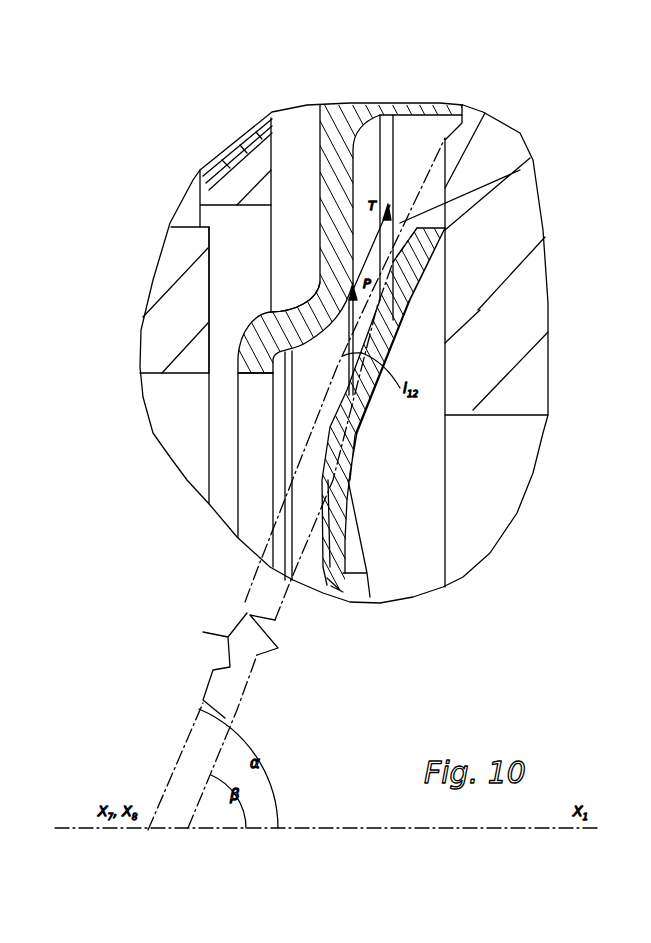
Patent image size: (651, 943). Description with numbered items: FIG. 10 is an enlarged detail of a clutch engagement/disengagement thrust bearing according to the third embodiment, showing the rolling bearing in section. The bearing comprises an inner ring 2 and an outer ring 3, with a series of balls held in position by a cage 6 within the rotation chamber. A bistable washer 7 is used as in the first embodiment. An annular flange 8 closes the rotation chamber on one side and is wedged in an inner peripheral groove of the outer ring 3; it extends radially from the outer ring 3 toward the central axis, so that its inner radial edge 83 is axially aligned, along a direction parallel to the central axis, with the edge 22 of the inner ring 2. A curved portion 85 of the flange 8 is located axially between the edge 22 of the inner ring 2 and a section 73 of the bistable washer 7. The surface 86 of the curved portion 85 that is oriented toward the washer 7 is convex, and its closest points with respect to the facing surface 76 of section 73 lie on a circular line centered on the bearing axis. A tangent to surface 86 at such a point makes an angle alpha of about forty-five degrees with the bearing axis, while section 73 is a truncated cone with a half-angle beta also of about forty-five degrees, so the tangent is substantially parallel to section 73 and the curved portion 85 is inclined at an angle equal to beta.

The inner ring 2 is at (175, 267).
The outer ring 3 is at (483, 362).
The cage 6 is at (250, 136).
The bistable washer 7 is at (375, 539).
The annular flange 8 is at (347, 130).
The edge of the inner ring 22 is at (225, 296).
The section of the bistable washer 73 is at (405, 280).
The facing surface of section 73 76 is at (405, 208).
The inner radial edge of the flange 83 is at (262, 377).
The curved portion of the flange 85 is at (330, 303).
The convex surface of the curved portion 86 is at (310, 347).